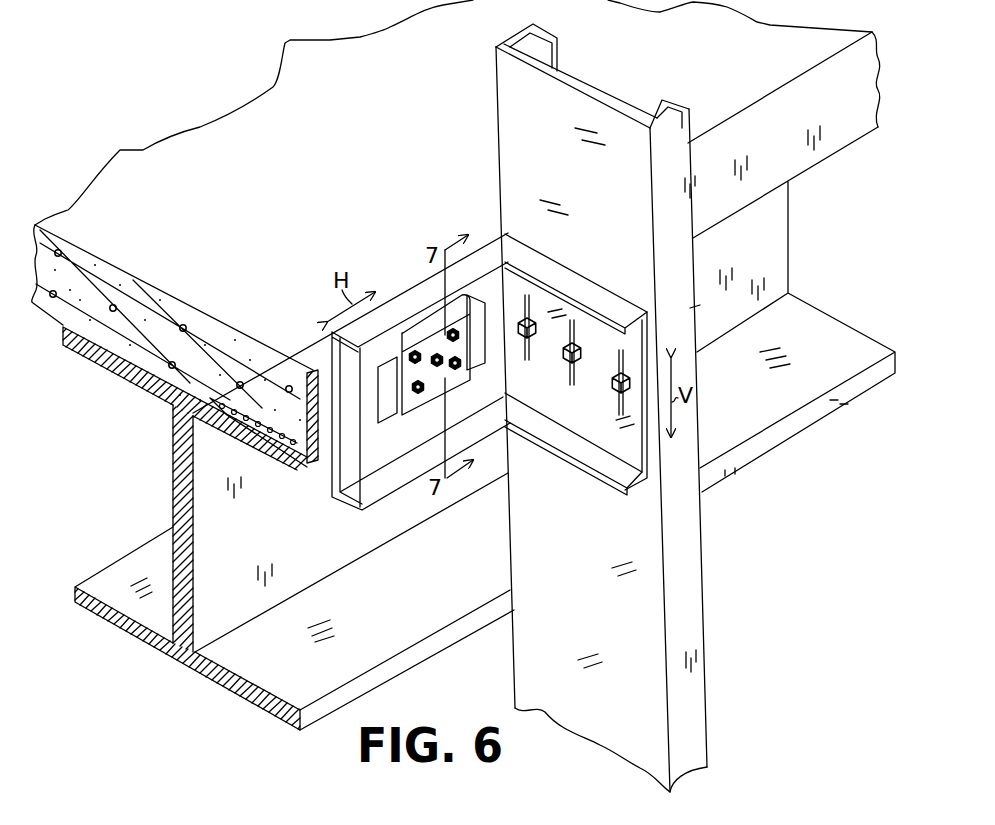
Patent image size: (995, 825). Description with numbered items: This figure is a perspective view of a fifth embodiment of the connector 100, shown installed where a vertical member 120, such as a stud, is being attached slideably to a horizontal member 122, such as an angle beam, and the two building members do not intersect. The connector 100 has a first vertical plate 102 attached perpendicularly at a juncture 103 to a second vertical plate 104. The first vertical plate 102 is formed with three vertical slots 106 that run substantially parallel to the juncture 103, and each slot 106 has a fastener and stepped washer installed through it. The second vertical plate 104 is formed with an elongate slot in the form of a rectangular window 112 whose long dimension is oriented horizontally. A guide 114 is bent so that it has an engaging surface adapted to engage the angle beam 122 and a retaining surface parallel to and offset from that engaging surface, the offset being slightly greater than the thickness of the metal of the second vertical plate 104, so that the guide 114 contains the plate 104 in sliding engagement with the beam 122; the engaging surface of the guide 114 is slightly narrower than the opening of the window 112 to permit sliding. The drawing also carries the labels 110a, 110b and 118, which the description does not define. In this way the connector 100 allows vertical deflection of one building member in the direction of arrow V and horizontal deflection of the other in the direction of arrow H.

The connector 100 is at (582, 262).
The first vertical plate 102 is at (613, 445).
The juncture 103 is at (508, 378).
The second vertical plate 104 is at (330, 480).
The vertical slots 106 is at (570, 380).
The first connector channel 110a is at (588, 455).
The second connector channel 110b is at (350, 506).
The rectangular window 112 is at (392, 401).
The guide 114 is at (418, 423).
The bolt plate with nuts 118 is at (423, 343).
The vertical member 120 is at (537, 652).
The horizontal member 122 is at (807, 155).